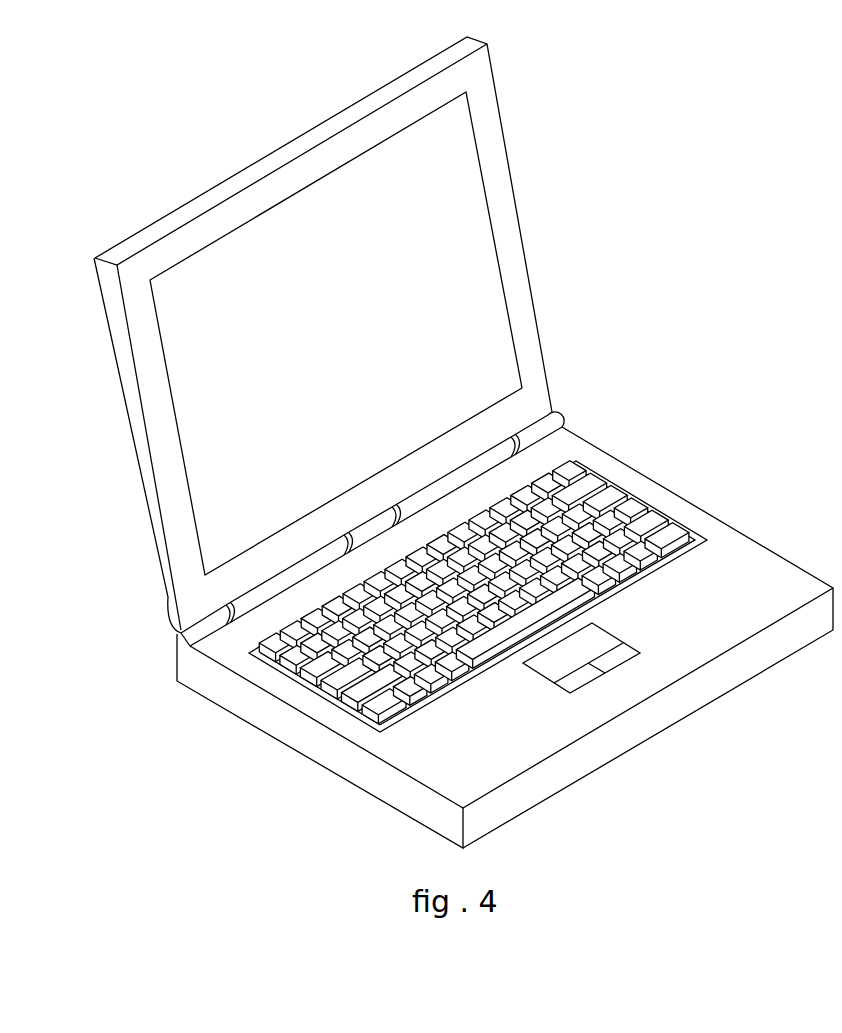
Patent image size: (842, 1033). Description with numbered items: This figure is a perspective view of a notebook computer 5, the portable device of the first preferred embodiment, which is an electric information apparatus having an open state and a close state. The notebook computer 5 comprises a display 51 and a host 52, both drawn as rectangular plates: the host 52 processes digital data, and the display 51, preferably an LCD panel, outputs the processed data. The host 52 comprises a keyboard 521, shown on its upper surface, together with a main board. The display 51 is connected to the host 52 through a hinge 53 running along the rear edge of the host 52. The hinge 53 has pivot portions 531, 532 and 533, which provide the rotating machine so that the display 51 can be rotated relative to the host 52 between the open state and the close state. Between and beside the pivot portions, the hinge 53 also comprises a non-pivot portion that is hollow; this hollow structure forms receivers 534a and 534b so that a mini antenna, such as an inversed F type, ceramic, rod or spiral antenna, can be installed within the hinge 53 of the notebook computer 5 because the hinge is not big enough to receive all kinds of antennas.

The notebook computer 5 is at (87, 640).
The display 51 is at (168, 597).
The host 52 is at (205, 687).
The hinge 53 is at (402, 576).
The keyboard 521 is at (630, 508).
The pivot portion 531 is at (555, 420).
The pivot portion 532 is at (372, 528).
The pivot portion 533 is at (210, 625).
The receiver 534a is at (440, 485).
The receiver 534b is at (298, 570).